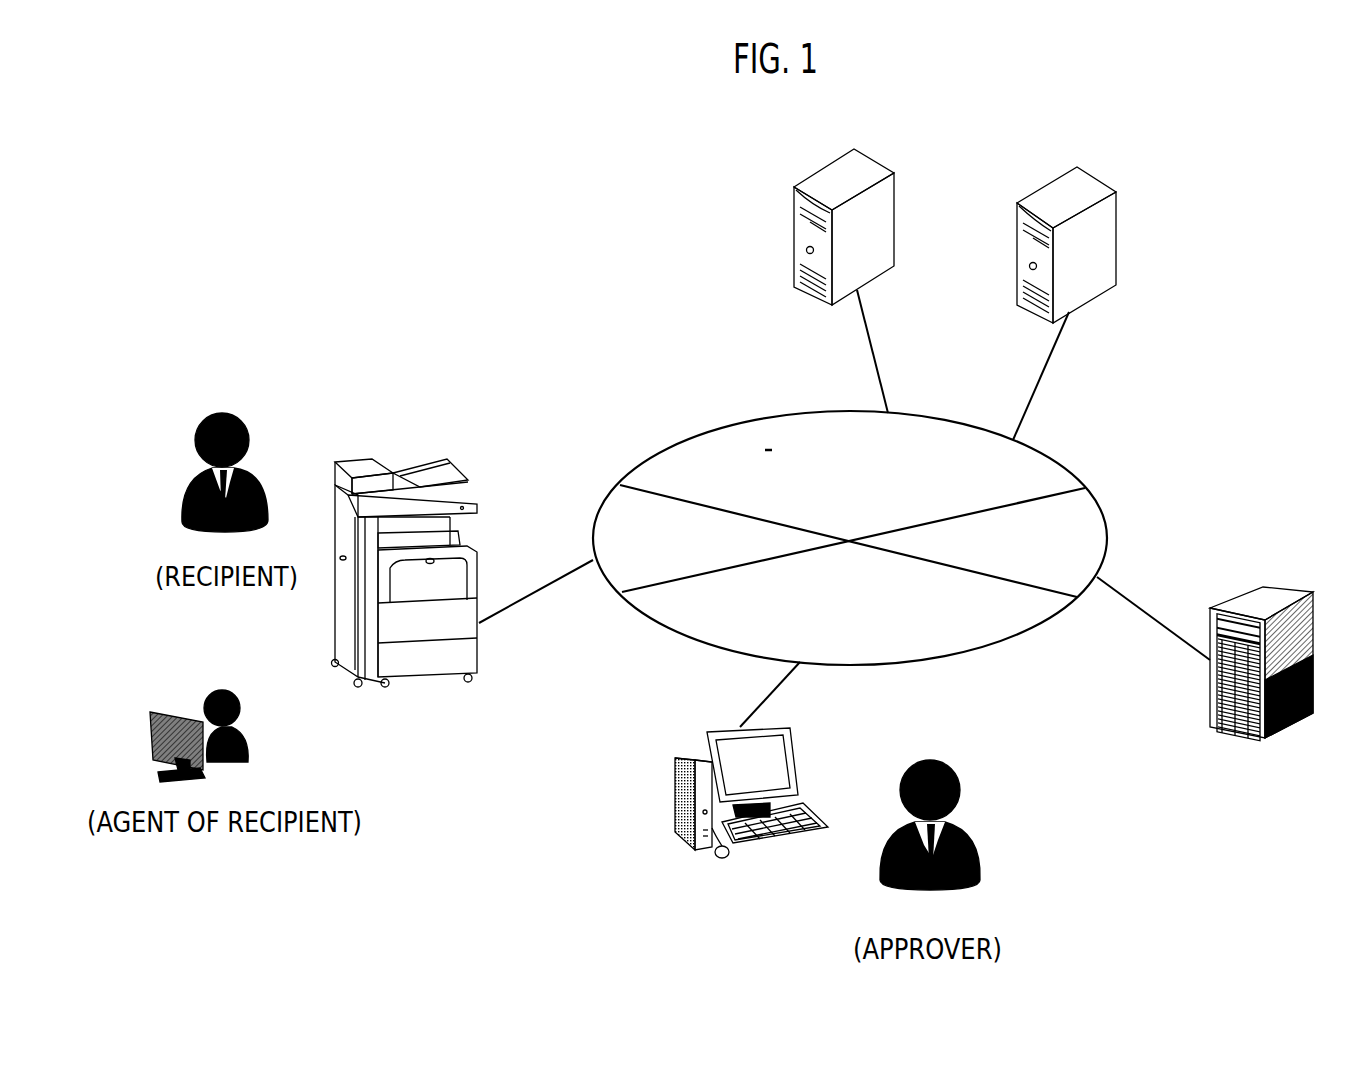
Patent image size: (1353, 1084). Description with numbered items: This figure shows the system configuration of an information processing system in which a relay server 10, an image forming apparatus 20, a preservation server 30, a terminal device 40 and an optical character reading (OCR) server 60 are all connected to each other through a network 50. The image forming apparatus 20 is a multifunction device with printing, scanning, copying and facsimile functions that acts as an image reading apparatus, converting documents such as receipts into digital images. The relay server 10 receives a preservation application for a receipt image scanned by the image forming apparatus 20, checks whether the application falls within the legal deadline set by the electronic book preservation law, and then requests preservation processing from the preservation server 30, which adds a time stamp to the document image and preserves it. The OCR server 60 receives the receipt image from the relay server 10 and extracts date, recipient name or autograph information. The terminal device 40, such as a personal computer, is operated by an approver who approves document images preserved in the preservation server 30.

The relay server 10 is at (1116, 238).
The image forming apparatus 20 is at (413, 463).
The preservation server 30 is at (1260, 602).
The terminal device 40 is at (687, 800).
The network 50 is at (687, 440).
The optical character reading (OCR) server 60 is at (794, 222).